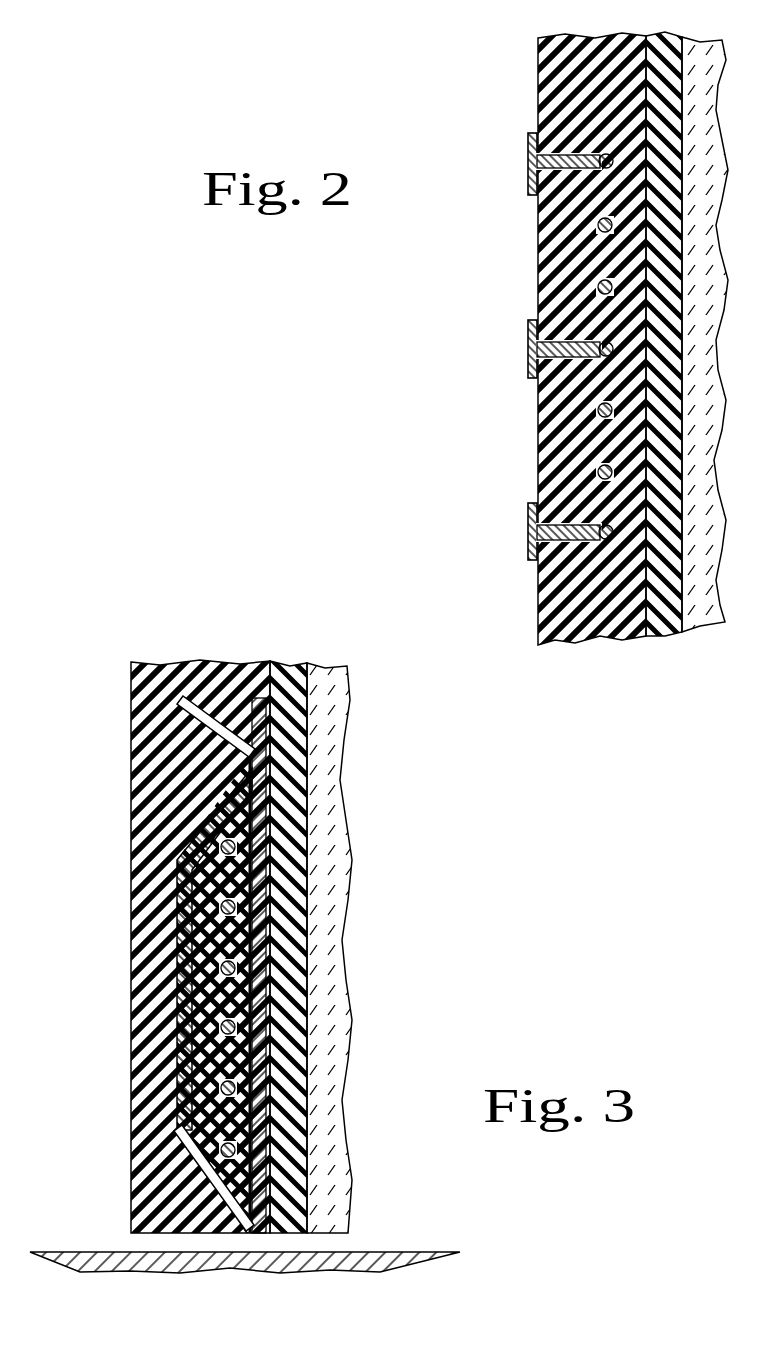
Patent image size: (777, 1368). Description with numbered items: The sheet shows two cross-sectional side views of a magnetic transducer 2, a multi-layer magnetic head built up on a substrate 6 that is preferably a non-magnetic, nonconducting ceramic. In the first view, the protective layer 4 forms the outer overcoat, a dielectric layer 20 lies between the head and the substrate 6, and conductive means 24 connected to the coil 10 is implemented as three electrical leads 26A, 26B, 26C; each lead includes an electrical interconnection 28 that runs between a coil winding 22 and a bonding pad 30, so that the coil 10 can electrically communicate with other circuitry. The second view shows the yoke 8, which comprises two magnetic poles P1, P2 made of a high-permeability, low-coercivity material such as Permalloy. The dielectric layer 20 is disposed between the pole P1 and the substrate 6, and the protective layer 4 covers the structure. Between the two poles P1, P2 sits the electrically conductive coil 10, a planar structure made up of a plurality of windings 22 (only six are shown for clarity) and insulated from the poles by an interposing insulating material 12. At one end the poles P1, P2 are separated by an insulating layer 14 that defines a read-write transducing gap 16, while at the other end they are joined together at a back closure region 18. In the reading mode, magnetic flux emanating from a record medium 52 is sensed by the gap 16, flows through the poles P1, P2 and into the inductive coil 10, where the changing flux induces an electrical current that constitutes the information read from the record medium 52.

In FIG. 2, the magnetic transducer 2 is at (446, 71).
In FIG. 3, the magnetic transducer 2 is at (398, 727).
In FIG. 2, the protective layer 4 is at (620, 645).
In FIG. 3, the protective layer 4 is at (165, 665).
In FIG. 2, the substrate 6 is at (700, 625).
In FIG. 3, the substrate 6 is at (335, 685).
In FIG. 3, the yoke 8 is at (153, 965).
In FIG. 2, the electrically conductive coil 10 is at (597, 488).
In FIG. 3, the electrically conductive coil 10 is at (198, 1097).
In FIG. 3, the insulating material 12 is at (264, 880).
In FIG. 3, the insulating layer 14 is at (250, 1238).
In FIG. 3, the read-write transducing gap 16 is at (245, 1236).
In FIG. 3, the back closure region 18 is at (215, 770).
In FIG. 2, the dielectric layer 20 is at (660, 640).
In FIG. 3, the dielectric layer 20 is at (292, 668).
In FIG. 2, the windings 22 is at (598, 268).
In FIG. 3, the windings 22 is at (220, 856).
In FIG. 2, the conductive means 24 is at (573, 140).
In FIG. 2, the electrical lead 26A is at (518, 147).
In FIG. 2, the electrical lead 26B is at (517, 330).
In FIG. 2, the electrical lead 26C is at (517, 540).
In FIG. 2, the electrical interconnection 28 is at (577, 174).
In FIG. 2, the bonding pad 30 is at (528, 173).
In FIG. 3, the record medium 52 is at (400, 1251).
In FIG. 3, the magnetic pole P1 is at (258, 698).
In FIG. 3, the magnetic pole P2 is at (192, 700).